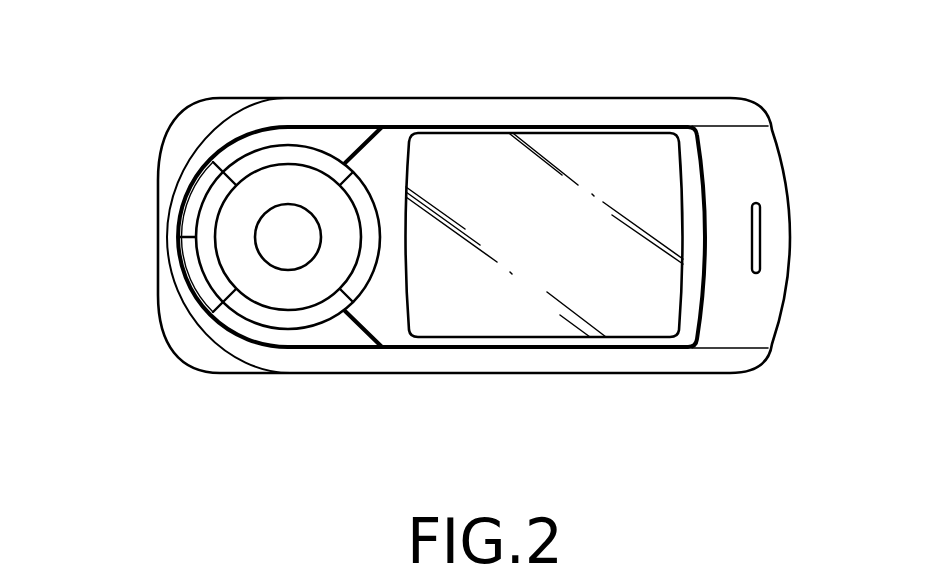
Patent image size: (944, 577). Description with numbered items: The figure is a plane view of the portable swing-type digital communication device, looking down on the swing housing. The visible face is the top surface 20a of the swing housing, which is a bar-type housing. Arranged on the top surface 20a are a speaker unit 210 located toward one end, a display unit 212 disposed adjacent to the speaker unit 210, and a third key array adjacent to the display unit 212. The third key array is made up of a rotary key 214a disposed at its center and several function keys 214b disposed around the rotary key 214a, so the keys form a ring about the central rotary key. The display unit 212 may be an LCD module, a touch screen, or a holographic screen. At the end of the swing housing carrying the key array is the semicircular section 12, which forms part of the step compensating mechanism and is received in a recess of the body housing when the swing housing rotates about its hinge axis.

The semicircular section 12 is at (378, 378).
The top surface of the swing housing 20a is at (727, 140).
The speaker unit 210 is at (760, 236).
The display unit 212 is at (465, 157).
The rotary key 214a is at (285, 217).
The function keys 214b is at (244, 152).